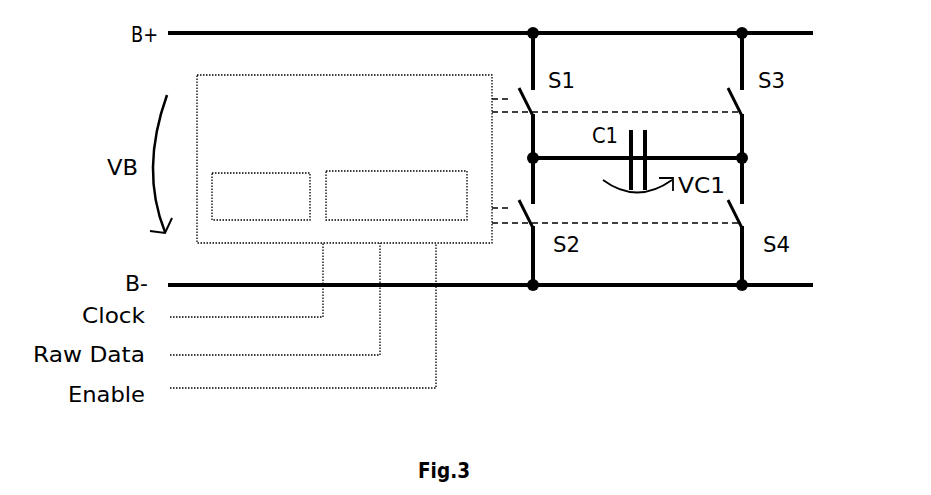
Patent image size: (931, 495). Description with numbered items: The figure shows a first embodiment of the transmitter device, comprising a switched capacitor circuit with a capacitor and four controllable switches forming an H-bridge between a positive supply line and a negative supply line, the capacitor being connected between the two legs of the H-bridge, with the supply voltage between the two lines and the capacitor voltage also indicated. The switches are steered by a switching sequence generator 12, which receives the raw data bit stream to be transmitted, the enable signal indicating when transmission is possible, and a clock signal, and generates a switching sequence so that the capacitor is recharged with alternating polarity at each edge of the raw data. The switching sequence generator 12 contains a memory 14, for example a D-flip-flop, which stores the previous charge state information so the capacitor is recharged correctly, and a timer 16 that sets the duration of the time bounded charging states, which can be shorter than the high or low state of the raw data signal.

The switching sequence generator 12 is at (207, 100).
The memory 14 is at (453, 210).
The timer 16 is at (298, 210).